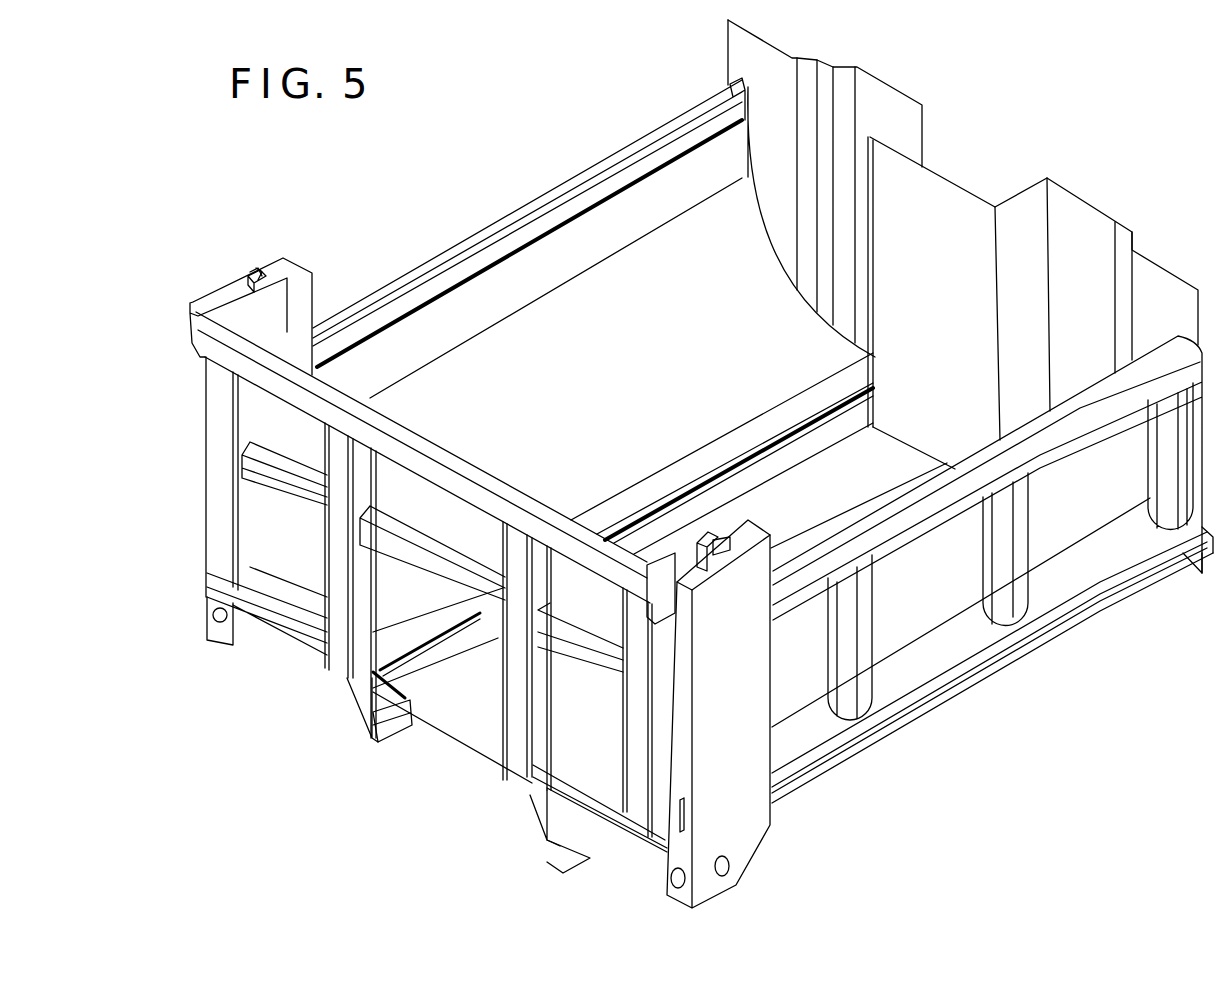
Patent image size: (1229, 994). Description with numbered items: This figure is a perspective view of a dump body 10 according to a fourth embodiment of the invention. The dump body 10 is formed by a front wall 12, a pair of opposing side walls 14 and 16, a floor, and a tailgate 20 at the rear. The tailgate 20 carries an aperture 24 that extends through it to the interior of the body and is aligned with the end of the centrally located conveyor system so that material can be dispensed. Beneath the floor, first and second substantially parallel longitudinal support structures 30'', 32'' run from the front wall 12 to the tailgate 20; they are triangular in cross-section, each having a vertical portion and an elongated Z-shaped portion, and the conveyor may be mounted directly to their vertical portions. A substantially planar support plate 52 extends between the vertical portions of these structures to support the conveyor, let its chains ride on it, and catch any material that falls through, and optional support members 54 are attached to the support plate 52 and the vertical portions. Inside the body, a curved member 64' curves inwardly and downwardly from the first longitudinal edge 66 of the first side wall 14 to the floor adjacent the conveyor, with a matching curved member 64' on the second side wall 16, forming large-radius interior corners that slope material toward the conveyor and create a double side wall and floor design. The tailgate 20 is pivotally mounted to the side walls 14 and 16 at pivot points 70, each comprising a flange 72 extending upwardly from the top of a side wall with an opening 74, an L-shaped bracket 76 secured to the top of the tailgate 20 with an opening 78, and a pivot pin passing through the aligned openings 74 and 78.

The dump body 10 is at (1078, 112).
The front wall 12 is at (1085, 238).
The first side wall 14 is at (475, 237).
The second side wall 16 is at (915, 615).
The tailgate 20 is at (290, 567).
The aperture 24 is at (483, 703).
The first longitudinal support structure 30'' is at (350, 743).
The second longitudinal support structure 32'' is at (571, 849).
The substantially planar support plate 52 is at (440, 740).
The support members 54 is at (378, 740).
The curved member 64' is at (721, 314).
The first longitudinal edge 66 is at (377, 320).
The pivot point 70 is at (236, 254).
The flange 72 is at (262, 272).
The opening 74 is at (716, 557).
The L-shaped bracket 76 is at (208, 297).
The opening 78 is at (255, 275).